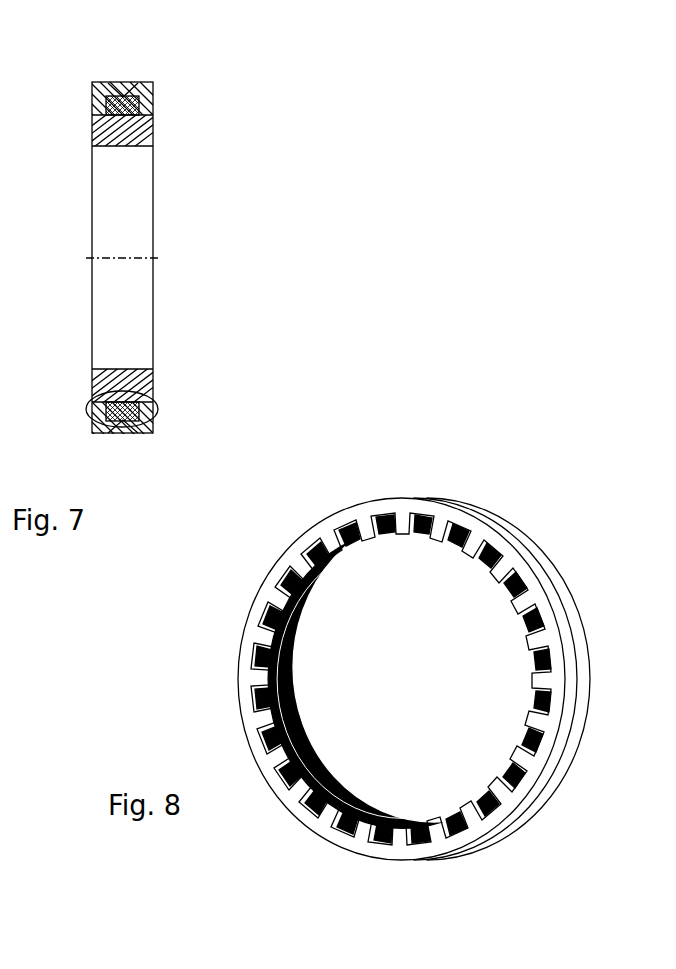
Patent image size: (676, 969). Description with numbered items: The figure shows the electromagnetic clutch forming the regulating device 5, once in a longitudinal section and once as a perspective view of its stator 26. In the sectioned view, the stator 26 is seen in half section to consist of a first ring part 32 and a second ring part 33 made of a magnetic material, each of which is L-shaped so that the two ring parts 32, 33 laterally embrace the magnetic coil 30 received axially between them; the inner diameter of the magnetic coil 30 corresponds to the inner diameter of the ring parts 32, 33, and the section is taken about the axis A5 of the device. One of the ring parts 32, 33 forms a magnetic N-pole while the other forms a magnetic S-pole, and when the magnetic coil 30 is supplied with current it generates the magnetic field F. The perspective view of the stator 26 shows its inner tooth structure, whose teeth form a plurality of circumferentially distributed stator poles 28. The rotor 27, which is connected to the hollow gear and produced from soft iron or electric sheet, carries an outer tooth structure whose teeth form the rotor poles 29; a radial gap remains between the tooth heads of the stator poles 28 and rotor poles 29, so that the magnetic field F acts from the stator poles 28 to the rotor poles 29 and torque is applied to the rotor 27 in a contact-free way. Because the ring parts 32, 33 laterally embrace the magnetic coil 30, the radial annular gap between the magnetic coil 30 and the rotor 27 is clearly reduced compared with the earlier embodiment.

In FIG. 7, the regulating device 5 is at (202, 95).
In FIG. 7, the stator 26 is at (150, 80).
In FIG. 8, the stator 26 is at (456, 493).
In FIG. 7, the rotor 27 is at (154, 132).
In FIG. 8, the stator poles 28 is at (310, 743).
In FIG. 8, the rotor poles 29 is at (297, 568).
In FIG. 7, the magnetic coil 30 is at (125, 432).
In FIG. 8, the magnetic coil 30 is at (297, 612).
In FIG. 7, the first ring part 32 is at (153, 94).
In FIG. 8, the first ring part 32 is at (505, 525).
In FIG. 7, the second ring part 33 is at (97, 81).
In FIG. 8, the second ring part 33 is at (243, 636).
In FIG. 7, the axis A5 is at (132, 256).
In FIG. 7, the magnetic field F is at (158, 393).